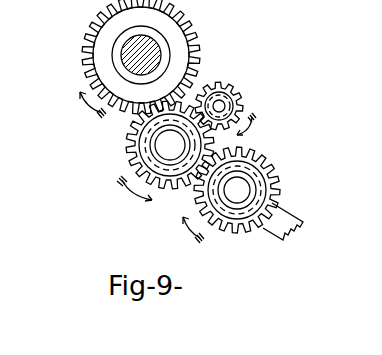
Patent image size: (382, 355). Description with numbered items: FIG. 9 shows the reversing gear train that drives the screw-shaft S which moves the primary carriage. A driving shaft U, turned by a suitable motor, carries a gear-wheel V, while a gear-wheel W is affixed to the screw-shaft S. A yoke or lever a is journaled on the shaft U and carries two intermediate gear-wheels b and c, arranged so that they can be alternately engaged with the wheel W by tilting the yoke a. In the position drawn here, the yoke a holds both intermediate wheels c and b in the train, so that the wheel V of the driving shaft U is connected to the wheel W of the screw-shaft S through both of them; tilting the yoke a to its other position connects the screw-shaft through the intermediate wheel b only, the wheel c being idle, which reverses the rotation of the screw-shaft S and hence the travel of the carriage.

The screw-shaft s is at (122, 61).
The gear-wheel w is at (149, 59).
The intermediate gear-wheel b is at (127, 157).
The intermediate gear-wheel c is at (227, 108).
The shaft U is at (233, 226).
The gear-wheel V is at (231, 201).
The yoke or lever a is at (283, 221).